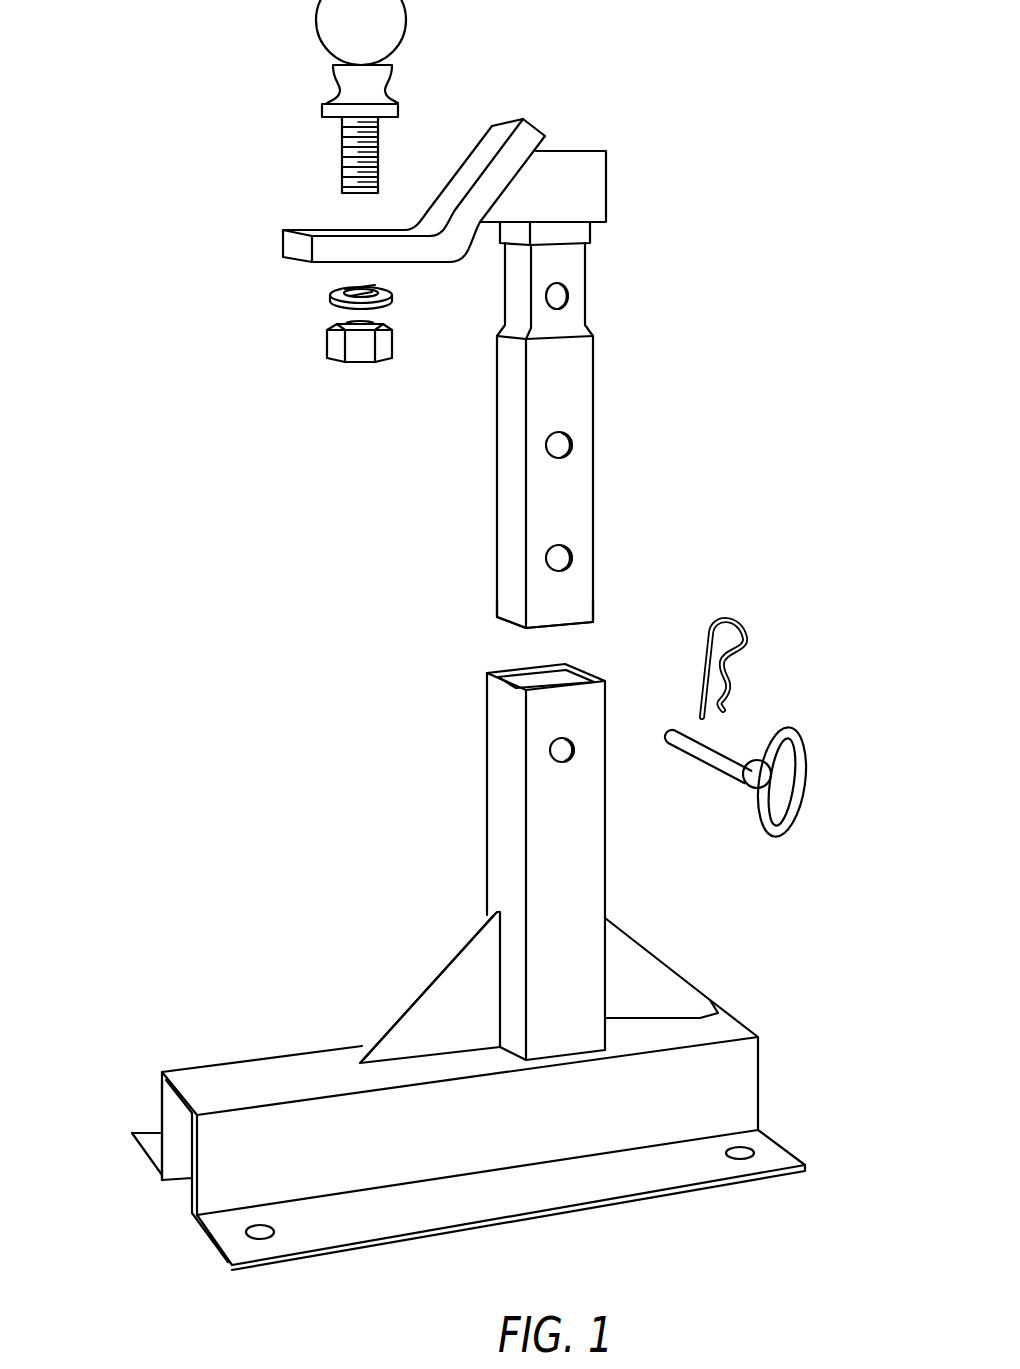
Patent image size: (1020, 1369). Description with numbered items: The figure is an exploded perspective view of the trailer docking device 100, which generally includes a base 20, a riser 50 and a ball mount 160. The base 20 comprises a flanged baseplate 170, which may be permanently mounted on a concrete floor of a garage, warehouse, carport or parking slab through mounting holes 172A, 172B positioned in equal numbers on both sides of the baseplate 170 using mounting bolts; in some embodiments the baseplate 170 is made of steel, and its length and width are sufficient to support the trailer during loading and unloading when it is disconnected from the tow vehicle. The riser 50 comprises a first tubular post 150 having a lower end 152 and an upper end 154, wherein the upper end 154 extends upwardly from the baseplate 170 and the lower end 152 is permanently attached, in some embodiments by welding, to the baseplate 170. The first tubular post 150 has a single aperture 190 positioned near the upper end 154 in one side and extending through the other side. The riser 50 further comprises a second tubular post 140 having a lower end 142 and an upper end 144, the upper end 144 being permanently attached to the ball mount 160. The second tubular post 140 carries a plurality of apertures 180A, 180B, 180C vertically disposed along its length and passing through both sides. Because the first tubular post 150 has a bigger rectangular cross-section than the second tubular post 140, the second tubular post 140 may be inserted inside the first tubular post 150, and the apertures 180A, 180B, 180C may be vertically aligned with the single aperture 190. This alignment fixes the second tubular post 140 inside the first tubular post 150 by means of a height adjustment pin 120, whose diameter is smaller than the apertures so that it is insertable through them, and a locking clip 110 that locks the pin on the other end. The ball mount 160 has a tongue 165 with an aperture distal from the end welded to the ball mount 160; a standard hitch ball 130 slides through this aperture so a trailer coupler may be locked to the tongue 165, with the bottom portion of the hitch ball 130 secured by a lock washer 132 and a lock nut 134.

The base 20 is at (163, 1093).
The riser 50 is at (605, 722).
The trailer docking device 100 is at (306, 847).
The locking clip 110 is at (745, 648).
The height adjustment pin 120 is at (806, 800).
The hitch ball 130 is at (317, 23).
The lock washer 132 is at (330, 297).
The lock nut 134 is at (328, 342).
The second tubular post 140 is at (593, 490).
The lower end of second tubular post 142 is at (497, 605).
The upper end of second tubular post 144 is at (590, 232).
The first tubular post 150 is at (605, 866).
The lower end of first tubular post 152 is at (604, 1020).
The upper end of first tubular post 154 is at (487, 703).
The ball mount 160 is at (606, 168).
The tongue 165 is at (430, 221).
The flanged baseplate 170 is at (782, 1147).
The mounting hole 172A is at (747, 1148).
The mounting hole 172B is at (253, 1231).
The aperture 180A is at (572, 300).
The aperture 180B is at (575, 450).
The aperture 180C is at (575, 560).
The single aperture 190 is at (578, 752).